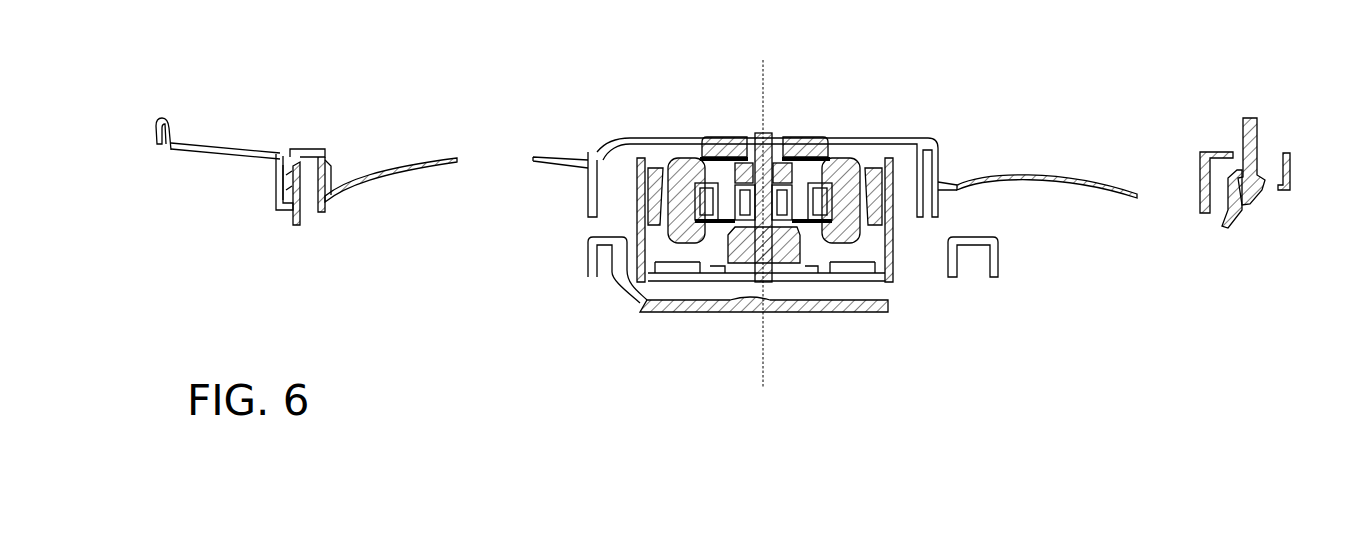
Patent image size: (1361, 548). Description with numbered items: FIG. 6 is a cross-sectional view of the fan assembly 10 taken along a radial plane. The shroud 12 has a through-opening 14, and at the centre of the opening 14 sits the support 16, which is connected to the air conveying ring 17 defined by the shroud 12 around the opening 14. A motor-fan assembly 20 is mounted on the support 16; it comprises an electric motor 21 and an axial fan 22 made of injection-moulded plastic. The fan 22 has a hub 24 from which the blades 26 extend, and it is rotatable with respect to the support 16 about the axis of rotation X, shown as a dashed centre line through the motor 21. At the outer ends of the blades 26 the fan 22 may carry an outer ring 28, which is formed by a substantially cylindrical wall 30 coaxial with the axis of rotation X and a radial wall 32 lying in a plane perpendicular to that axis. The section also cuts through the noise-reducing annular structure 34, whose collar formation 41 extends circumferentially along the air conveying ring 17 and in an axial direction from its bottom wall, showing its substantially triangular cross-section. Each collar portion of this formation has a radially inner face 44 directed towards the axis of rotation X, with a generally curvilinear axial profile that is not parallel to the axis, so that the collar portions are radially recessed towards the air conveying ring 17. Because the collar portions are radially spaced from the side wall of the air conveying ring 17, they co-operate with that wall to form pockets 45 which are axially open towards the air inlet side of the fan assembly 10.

The electric motor assembly 10 is at (723, 217).
The shroud 12 is at (158, 145).
The through-opening 14 is at (320, 225).
The support 16 is at (835, 313).
The air conveying ring 17 is at (270, 204).
The motor-fan assembly 20 is at (897, 138).
The electric motor 21 is at (613, 277).
The axial fan 22 is at (610, 141).
The hub 24 is at (720, 135).
The blades 26 is at (420, 153).
The outer ring 28 is at (1213, 150).
The cylindrical wall 30 is at (327, 210).
The radial wall 32 is at (300, 147).
The noise-reducing annular structure 34 is at (1238, 142).
The collar formation 41 is at (292, 173).
The radially inner face 44 is at (327, 158).
The pockets 45 is at (280, 174).
The axis of rotation x is at (766, 90).